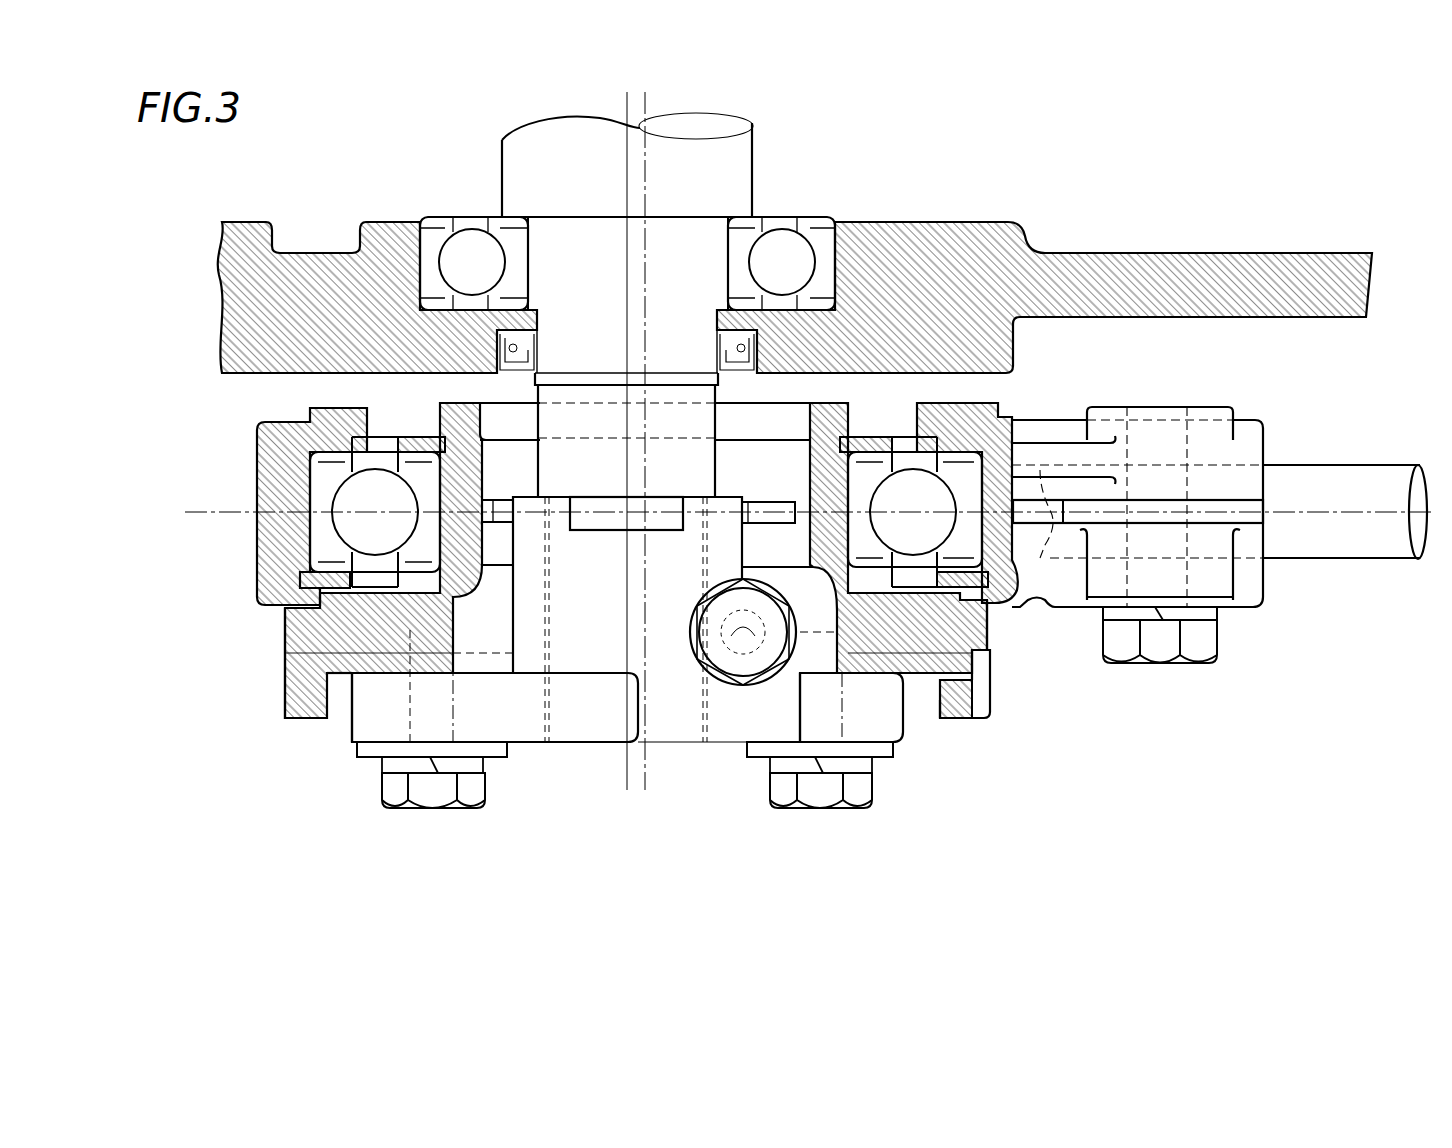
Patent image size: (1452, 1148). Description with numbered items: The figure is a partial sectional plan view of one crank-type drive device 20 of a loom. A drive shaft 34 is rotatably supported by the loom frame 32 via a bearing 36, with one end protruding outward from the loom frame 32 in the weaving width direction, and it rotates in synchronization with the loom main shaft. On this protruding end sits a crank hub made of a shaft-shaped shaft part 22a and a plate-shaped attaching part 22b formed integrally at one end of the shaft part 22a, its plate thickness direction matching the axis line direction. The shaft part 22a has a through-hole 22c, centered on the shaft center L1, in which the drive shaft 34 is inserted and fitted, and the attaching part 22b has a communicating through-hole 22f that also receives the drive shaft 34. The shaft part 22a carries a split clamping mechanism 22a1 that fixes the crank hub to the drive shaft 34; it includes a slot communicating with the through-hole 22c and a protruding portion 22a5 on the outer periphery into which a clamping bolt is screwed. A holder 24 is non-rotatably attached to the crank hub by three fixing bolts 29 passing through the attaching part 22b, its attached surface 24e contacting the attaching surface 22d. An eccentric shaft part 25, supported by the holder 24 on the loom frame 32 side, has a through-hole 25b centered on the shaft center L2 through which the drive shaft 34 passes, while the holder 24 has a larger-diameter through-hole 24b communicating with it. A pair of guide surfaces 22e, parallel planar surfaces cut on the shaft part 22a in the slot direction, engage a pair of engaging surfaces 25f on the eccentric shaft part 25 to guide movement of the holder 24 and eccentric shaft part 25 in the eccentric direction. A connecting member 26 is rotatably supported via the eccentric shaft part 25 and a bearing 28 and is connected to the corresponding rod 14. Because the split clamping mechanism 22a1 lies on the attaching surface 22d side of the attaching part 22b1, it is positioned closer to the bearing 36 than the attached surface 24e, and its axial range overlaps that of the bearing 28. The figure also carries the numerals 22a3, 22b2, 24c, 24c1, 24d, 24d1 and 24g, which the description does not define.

The rod 14 is at (1380, 545).
The drive device 20 is at (1242, 759).
The shaft part 22a is at (285, 652).
The split clamping mechanism 22a1 is at (975, 663).
The fastening bolt 22a3 is at (742, 662).
The protruding portion 22a5 is at (808, 640).
The attaching part 22b is at (352, 740).
The attaching part 22b1 is at (350, 715).
The flange right portion 22b2 is at (905, 745).
The through-hole 22c is at (548, 605).
The attaching surface 22d is at (895, 655).
The guide surfaces 22e is at (597, 518).
The through-hole 22f is at (548, 700).
The holder 24 is at (285, 620).
The through-hole 24b is at (283, 643).
The housing foot 24c is at (300, 707).
The housing foot notch 24c1 is at (340, 697).
The housing right portion 24d is at (990, 712).
The housing right tab 24d1 is at (990, 690).
The attached surface 24e is at (955, 720).
The housing rib 24g is at (975, 717).
The eccentric shaft part 25 is at (416, 470).
The through-hole 25b is at (800, 424).
The engaging surfaces 25f is at (783, 505).
The connecting member 26 is at (1250, 598).
The bearing 28 is at (318, 485).
The fixing bolts 29 is at (438, 810).
The loom frame 32 is at (1242, 318).
The drive shaft 34 is at (530, 170).
The bearing 36 is at (818, 216).
The shaft center L1 is at (625, 792).
The shaft center L2 is at (647, 792).